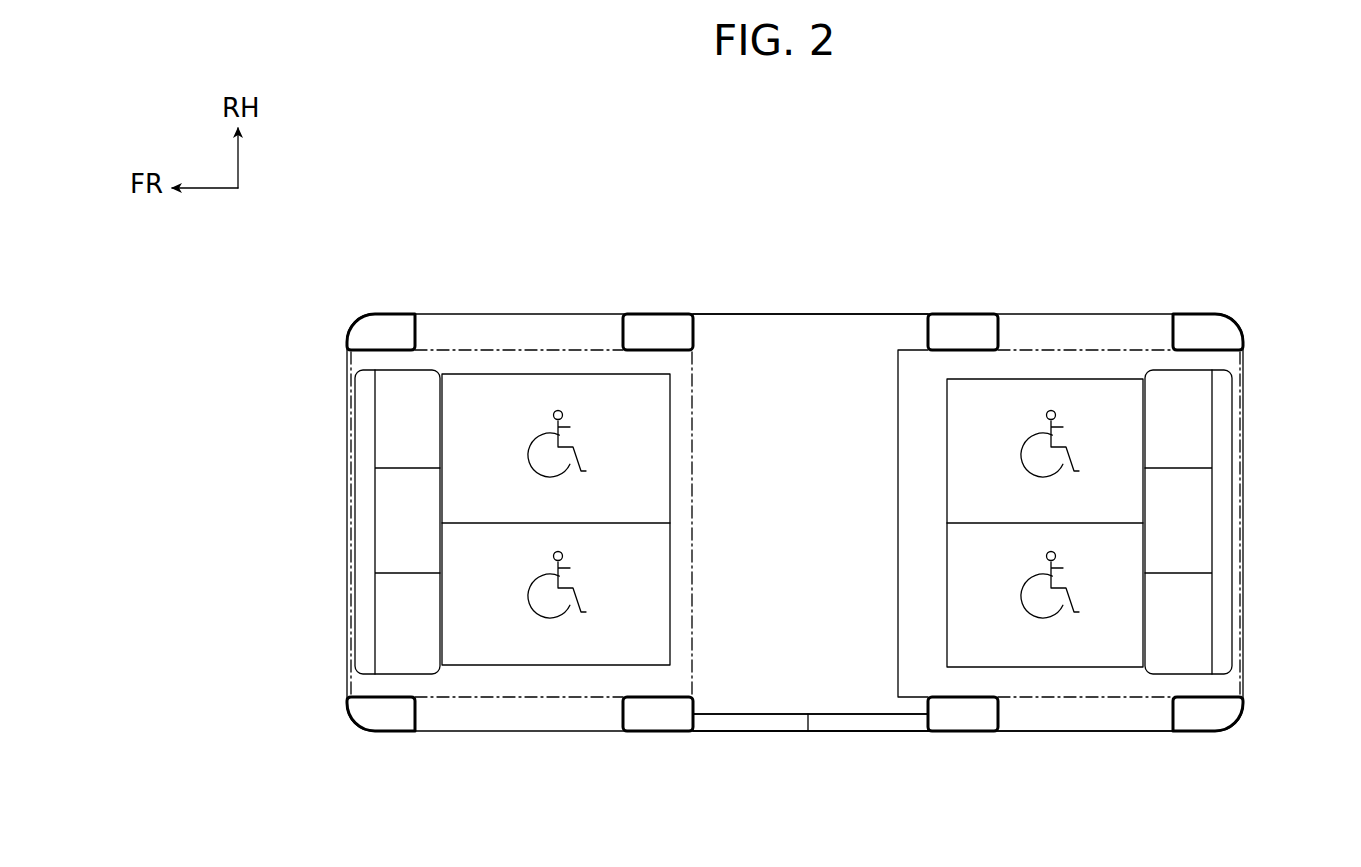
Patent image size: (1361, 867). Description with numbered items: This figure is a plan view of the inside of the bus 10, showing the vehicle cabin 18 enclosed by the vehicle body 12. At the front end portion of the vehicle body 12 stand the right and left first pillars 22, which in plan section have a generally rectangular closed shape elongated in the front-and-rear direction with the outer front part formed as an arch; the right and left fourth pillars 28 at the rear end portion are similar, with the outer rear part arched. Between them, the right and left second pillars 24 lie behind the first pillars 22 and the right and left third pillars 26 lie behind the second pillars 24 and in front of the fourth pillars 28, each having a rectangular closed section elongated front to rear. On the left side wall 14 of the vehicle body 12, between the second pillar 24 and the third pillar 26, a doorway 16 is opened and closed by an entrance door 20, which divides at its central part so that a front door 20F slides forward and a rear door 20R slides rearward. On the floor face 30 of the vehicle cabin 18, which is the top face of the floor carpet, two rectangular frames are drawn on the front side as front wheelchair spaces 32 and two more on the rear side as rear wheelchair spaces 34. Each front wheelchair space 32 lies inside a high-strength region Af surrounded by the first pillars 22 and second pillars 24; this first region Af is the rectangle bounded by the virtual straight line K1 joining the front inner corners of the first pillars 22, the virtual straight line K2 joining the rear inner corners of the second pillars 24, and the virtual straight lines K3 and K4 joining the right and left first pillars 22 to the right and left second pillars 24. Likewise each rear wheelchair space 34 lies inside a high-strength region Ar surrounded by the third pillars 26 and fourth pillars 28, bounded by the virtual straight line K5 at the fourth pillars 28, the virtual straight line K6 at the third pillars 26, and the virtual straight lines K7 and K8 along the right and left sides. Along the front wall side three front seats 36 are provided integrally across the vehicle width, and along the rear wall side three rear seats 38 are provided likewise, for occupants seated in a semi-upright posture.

The bus 10 is at (1140, 255).
The vehicle body 12 is at (765, 308).
The left side wall 14 is at (1125, 733).
The doorway 16 is at (702, 733).
The vehicle cabin 18 is at (808, 526).
The entrance door 20 is at (811, 771).
The front door 20F is at (735, 733).
The rear door 20R is at (888, 733).
The first pillar 22 is at (384, 330).
The second pillar 24 is at (664, 330).
The third pillar 26 is at (966, 330).
The fourth pillar 28 is at (1212, 330).
The floor face 30 is at (733, 330).
The front wheelchair space 32 is at (640, 450).
The rear wheelchair space 34 is at (965, 464).
The front seat 36 is at (400, 404).
The rear seat 38 is at (1197, 398).
The virtual straight line K1 is at (350, 436).
The virtual straight line K2 is at (693, 432).
The virtual straight line K3 is at (442, 332).
The virtual straight line K4 is at (500, 733).
The virtual straight line K5 is at (1245, 375).
The virtual straight line K6 is at (898, 632).
The virtual straight line K7 is at (1098, 345).
The virtual straight line K8 is at (1065, 733).
The high-strength region Af is at (517, 452).
The high-strength region Ar is at (1071, 451).